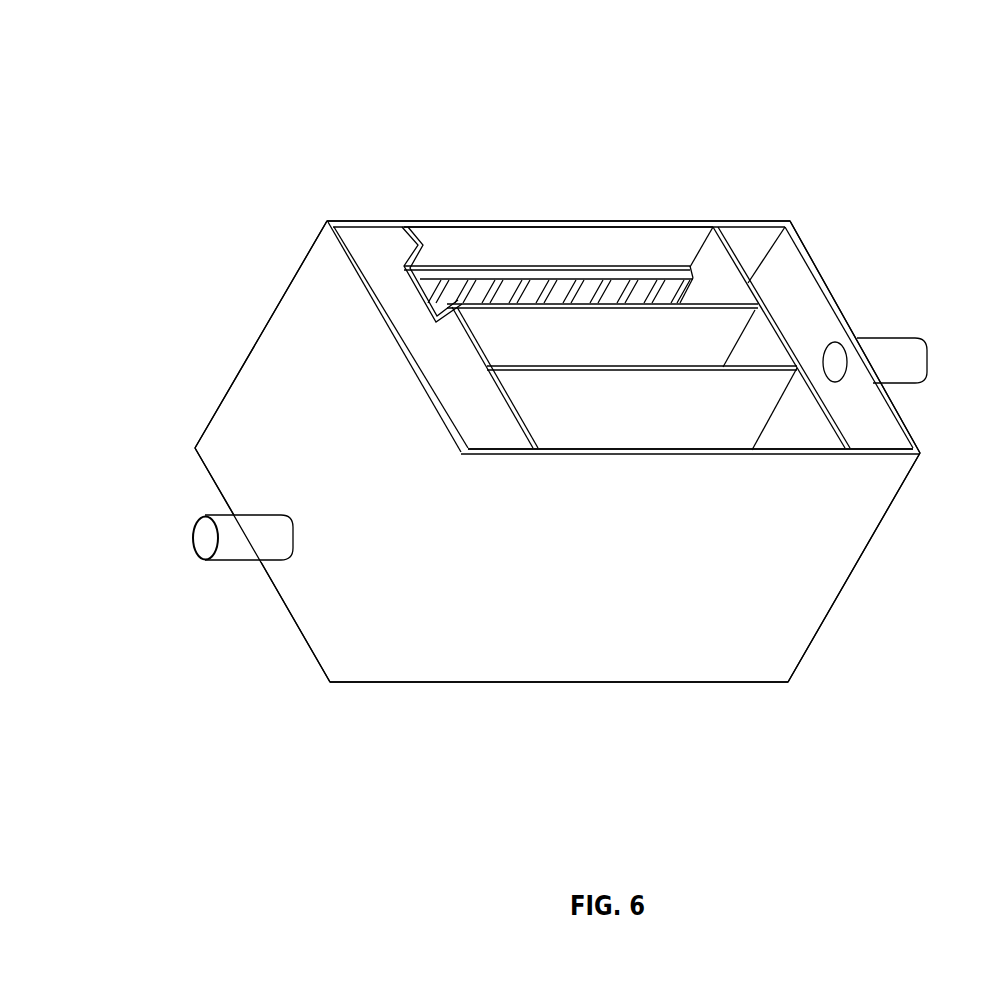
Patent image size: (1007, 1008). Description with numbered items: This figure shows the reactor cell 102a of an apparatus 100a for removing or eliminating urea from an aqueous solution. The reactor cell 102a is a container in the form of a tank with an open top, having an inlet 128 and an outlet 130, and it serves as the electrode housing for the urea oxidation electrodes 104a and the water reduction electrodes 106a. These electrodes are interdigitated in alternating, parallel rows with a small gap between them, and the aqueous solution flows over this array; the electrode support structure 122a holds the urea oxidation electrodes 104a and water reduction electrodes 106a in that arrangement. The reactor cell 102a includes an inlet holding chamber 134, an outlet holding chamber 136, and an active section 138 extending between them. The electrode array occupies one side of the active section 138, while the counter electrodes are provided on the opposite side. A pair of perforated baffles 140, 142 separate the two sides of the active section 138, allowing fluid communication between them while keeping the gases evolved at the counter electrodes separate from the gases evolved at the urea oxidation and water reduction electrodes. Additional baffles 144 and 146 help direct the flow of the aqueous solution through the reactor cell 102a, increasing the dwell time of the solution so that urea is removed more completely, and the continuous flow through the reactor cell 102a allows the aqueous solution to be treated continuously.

The apparatus 100a is at (732, 150).
The reactor cell 102a is at (692, 645).
The urea oxidation electrode 104a is at (497, 290).
The water reduction electrode 106a is at (517, 295).
The electrode support structure 122a is at (663, 277).
The inlet 128 is at (883, 343).
The outlet 130 is at (238, 545).
The inlet holding chamber 134 is at (794, 294).
The outlet holding chamber 136 is at (489, 439).
The active section 138 is at (632, 246).
The perforated baffle 140 is at (680, 342).
The perforated baffle 142 is at (590, 418).
The baffle 144 is at (807, 420).
The baffle 146 is at (397, 290).